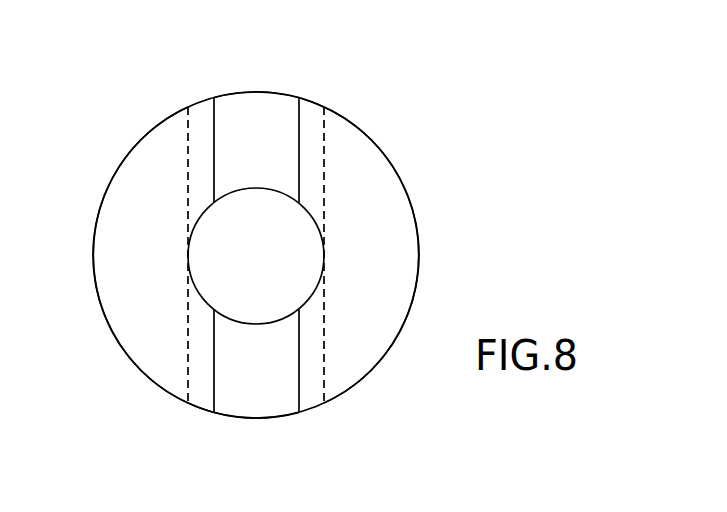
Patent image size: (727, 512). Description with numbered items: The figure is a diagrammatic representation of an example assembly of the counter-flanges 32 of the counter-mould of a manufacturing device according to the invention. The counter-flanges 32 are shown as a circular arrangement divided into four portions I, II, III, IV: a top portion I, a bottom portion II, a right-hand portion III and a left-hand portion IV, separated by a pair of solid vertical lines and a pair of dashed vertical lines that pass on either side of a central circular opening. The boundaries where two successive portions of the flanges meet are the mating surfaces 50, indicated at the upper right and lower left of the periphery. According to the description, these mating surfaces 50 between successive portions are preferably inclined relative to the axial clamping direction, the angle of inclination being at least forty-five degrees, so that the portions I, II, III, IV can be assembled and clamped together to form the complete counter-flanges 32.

The counter-flanges 32 is at (235, 102).
The mating surfaces 50 is at (317, 95).
The portion I is at (272, 105).
The portion II is at (223, 410).
The portion III is at (385, 178).
The portion IV is at (137, 178).